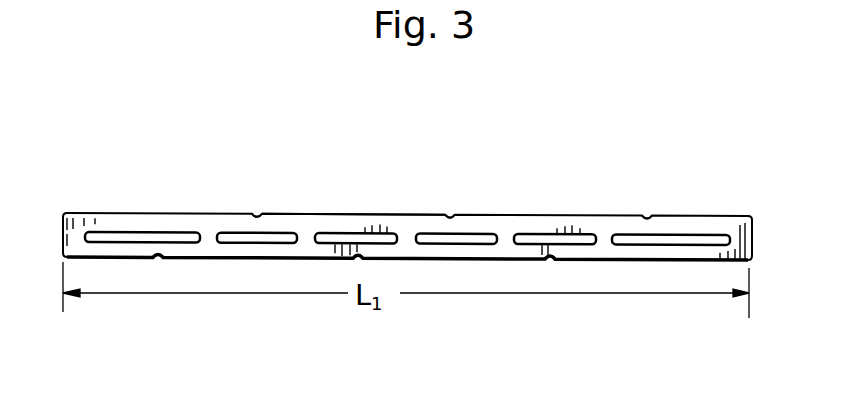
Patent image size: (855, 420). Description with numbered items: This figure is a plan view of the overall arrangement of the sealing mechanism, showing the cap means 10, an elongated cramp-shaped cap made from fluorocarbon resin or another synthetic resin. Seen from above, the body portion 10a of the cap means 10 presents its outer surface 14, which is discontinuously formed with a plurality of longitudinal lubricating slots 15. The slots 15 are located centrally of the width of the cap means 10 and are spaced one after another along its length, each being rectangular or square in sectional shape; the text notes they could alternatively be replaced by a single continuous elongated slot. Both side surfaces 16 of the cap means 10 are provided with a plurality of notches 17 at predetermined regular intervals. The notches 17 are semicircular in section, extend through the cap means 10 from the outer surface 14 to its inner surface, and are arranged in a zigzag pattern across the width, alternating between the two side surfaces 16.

The cap means 10 is at (538, 214).
The body portion 10a is at (337, 214).
The outer surface 14 is at (670, 250).
The longitudinal lubricating slots 15 is at (707, 215).
The side surfaces 16 is at (397, 214).
The notches 17 is at (257, 214).